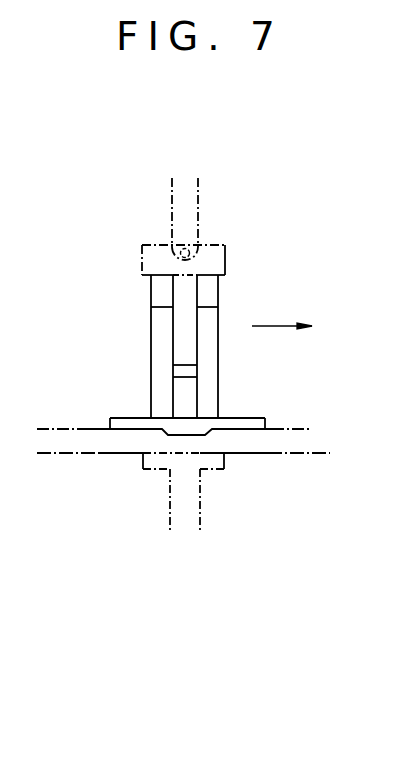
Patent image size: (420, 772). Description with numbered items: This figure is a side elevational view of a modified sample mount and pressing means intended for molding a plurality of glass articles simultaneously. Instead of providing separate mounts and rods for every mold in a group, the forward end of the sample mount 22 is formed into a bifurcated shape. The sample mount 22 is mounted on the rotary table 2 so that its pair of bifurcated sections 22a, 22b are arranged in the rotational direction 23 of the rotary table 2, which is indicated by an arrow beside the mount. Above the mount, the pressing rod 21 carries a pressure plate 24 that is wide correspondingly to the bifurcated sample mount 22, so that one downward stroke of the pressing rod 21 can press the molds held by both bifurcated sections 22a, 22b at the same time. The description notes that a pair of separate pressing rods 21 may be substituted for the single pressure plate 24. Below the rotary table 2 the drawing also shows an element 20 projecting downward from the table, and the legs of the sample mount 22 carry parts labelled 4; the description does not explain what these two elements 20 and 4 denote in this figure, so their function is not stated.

The rotary table 2 is at (248, 443).
The terminal contact 4 is at (156, 294).
The lead 20 is at (192, 515).
The pressing rod 21 is at (190, 193).
The sample mount 22 is at (172, 345).
The bifurcated section 22a is at (157, 370).
The bifurcated section 22b is at (210, 392).
The rotational direction 23 is at (282, 327).
The pressure plate 24 is at (210, 262).